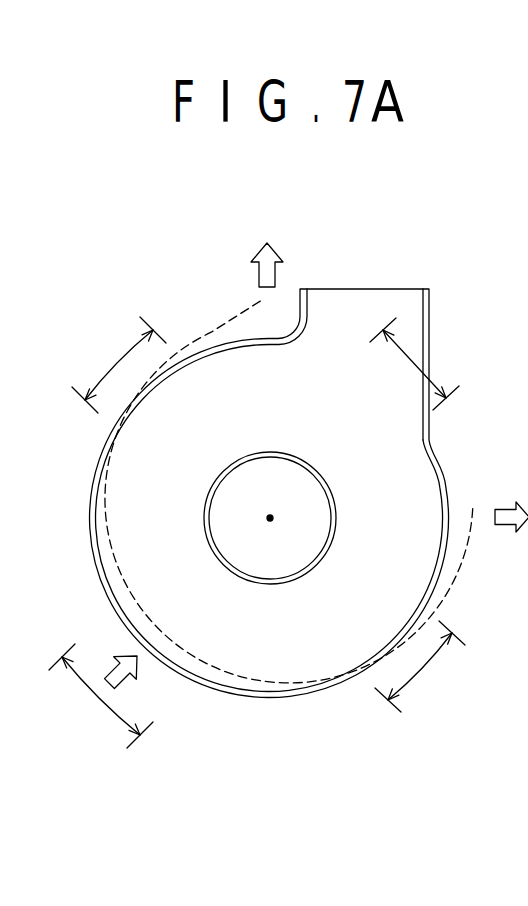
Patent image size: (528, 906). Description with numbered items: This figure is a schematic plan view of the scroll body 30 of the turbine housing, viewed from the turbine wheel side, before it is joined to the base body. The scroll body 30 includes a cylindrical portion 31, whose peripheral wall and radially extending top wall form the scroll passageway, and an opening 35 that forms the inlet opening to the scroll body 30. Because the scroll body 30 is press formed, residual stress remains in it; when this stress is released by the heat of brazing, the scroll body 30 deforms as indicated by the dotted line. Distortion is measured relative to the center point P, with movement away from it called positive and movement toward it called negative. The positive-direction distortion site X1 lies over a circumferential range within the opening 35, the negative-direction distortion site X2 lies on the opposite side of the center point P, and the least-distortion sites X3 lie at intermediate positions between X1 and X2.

The scroll body 30 is at (363, 248).
The cylindrical portion 31 is at (270, 702).
The opening 35 is at (429, 310).
The center point P is at (273, 517).
The positive-direction distortion site X1 is at (440, 385).
The negative-direction distortion site X2 is at (93, 701).
The least-distortion sites X3 is at (113, 363).